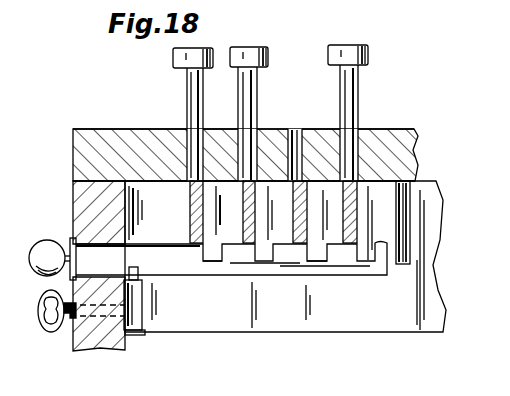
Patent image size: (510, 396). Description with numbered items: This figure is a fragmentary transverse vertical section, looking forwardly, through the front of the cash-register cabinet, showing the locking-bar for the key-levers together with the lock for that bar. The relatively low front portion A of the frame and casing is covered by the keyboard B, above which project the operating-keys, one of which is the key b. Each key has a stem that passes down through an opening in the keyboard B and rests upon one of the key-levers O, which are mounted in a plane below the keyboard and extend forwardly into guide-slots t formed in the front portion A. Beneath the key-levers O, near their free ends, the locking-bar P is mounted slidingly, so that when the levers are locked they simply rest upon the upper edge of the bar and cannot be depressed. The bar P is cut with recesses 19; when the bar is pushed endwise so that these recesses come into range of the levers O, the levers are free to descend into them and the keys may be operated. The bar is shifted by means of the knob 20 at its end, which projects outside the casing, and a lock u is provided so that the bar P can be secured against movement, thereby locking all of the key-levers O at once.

The keyboard B is at (417, 143).
The front portion A is at (430, 297).
The operating-key b is at (368, 60).
The key-lever O is at (190, 196).
The locking-bar P is at (192, 272).
The recess 19 is at (312, 253).
The guide-slot t is at (403, 244).
The knob 20 is at (43, 245).
The lock u is at (139, 336).